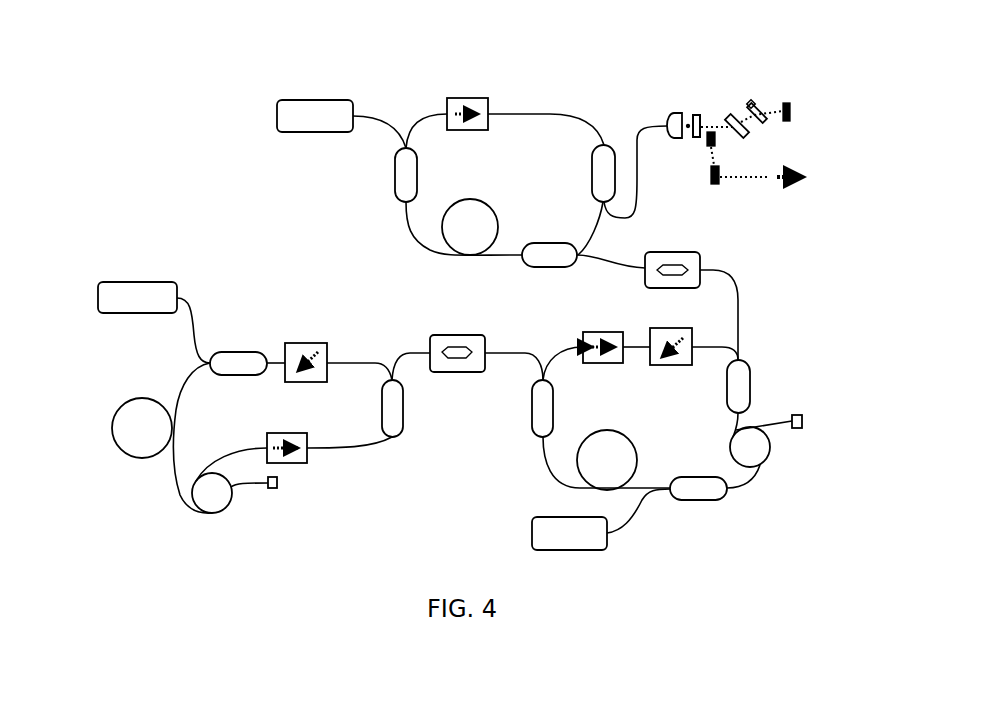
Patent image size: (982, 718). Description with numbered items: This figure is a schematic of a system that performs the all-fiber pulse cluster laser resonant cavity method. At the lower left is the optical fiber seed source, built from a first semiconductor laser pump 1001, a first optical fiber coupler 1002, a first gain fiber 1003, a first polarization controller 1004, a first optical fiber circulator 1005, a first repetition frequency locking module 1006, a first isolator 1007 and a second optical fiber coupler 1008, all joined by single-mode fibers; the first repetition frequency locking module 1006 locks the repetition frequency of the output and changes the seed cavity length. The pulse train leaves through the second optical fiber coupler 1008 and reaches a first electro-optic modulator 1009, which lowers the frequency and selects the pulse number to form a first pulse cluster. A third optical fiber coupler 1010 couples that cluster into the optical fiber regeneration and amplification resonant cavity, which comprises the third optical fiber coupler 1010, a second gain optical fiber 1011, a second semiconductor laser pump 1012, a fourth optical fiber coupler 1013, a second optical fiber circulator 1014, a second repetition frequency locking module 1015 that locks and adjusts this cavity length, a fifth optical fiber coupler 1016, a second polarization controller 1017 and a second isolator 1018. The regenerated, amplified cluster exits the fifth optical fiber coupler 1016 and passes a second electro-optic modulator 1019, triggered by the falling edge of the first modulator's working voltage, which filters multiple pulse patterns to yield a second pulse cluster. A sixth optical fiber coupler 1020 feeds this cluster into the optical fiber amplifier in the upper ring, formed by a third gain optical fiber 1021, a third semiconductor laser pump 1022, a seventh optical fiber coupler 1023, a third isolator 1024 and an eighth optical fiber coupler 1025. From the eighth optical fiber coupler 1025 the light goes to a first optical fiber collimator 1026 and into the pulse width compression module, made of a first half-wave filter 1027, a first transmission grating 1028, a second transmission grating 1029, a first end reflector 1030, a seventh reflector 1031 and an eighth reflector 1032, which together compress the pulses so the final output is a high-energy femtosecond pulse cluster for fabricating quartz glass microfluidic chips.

The first semiconductor laser pump 1001 is at (134, 300).
The first optical fiber coupler 1002 is at (233, 367).
The first gain fiber 1003 is at (138, 398).
The first polarization controller 1004 is at (305, 343).
The first optical fiber circulator 1005 is at (207, 515).
The first repetition frequency locking module 1006 is at (275, 490).
The first isolator 1007 is at (305, 465).
The second optical fiber coupler 1008 is at (398, 437).
The first electro-optic modulator 1009 is at (455, 372).
The third optical fiber coupler 1010 is at (532, 430).
The second gain optical fiber 1011 is at (615, 432).
The second semiconductor laser pump 1012 is at (607, 543).
The fourth optical fiber coupler 1013 is at (710, 500).
The second optical fiber circulator 1014 is at (765, 463).
The second repetition frequency locking module 1015 is at (797, 415).
The fifth optical fiber coupler 1016 is at (745, 362).
The second polarization controller 1017 is at (658, 330).
The second isolator 1018 is at (593, 337).
The second electro-optic modulator 1019 is at (665, 252).
The sixth optical fiber coupler 1020 is at (537, 267).
The third gain optical fiber 1021 is at (447, 248).
The third semiconductor laser pump 1022 is at (310, 107).
The seventh optical fiber coupler 1023 is at (405, 183).
The third isolator 1024 is at (465, 98).
The eighth optical fiber coupler 1025 is at (610, 147).
The first optical fiber collimator 1026 is at (677, 110).
The first half-wave filter 1027 is at (697, 113).
The first transmission grating 1028 is at (735, 118).
The second transmission grating 1029 is at (755, 106).
The first end reflector 1030 is at (788, 100).
The seventh reflector 1031 is at (716, 143).
The eighth reflector 1032 is at (720, 183).